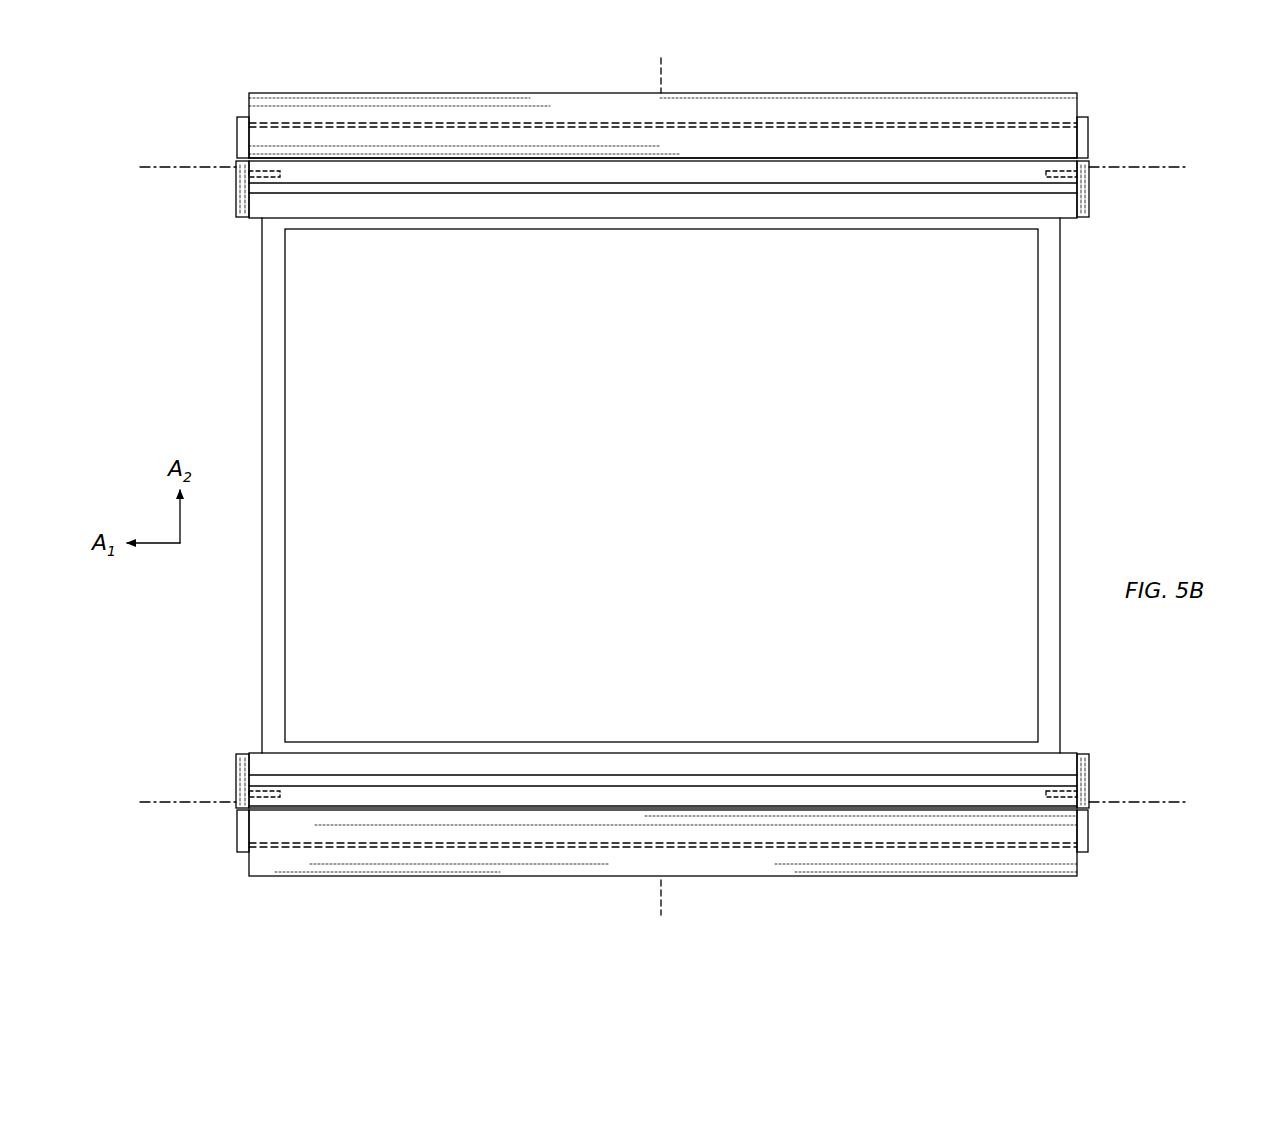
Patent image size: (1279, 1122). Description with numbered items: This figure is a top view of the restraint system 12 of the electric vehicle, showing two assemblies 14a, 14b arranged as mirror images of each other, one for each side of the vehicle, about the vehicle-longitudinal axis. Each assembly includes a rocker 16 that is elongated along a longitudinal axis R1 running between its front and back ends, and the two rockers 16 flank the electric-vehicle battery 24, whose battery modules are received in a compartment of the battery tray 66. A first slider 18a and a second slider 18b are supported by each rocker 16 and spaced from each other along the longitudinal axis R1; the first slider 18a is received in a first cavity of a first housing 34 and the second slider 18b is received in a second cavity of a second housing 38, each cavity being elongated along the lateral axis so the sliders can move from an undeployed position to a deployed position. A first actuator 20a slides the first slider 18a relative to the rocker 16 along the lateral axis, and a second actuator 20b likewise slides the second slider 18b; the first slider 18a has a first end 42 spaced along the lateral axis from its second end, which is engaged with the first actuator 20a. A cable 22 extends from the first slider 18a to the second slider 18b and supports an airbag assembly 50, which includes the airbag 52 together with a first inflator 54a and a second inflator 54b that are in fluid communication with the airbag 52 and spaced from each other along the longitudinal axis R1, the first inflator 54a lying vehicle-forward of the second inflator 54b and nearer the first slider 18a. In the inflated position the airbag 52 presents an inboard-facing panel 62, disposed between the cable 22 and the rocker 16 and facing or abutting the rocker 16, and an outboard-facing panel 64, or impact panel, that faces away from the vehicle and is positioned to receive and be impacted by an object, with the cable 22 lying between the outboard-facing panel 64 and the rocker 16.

The restraint system 12 is at (742, 92).
The assembly 14a is at (932, 695).
The assembly 14b is at (663, 93).
The rocker 16 is at (498, 166).
The first slider 18a is at (222, 135).
The second slider 18b is at (1097, 135).
The first actuator 20a is at (237, 210).
The second actuator 20b is at (1090, 210).
The cable 22 is at (470, 125).
The electric-vehicle battery 24 is at (588, 229).
The first housing 34 is at (237, 162).
The second housing 38 is at (1089, 162).
The first end 42 is at (242, 117).
The airbag assembly 50 is at (513, 92).
The airbag 52 is at (568, 93).
The first inflator 54a is at (282, 174).
The second inflator 54b is at (1044, 174).
The inboard-facing panel 62 is at (265, 157).
The outboard-facing panel 64 is at (355, 93).
The battery tray 66 is at (708, 219).
The longitudinal axis R1 is at (662, 486).